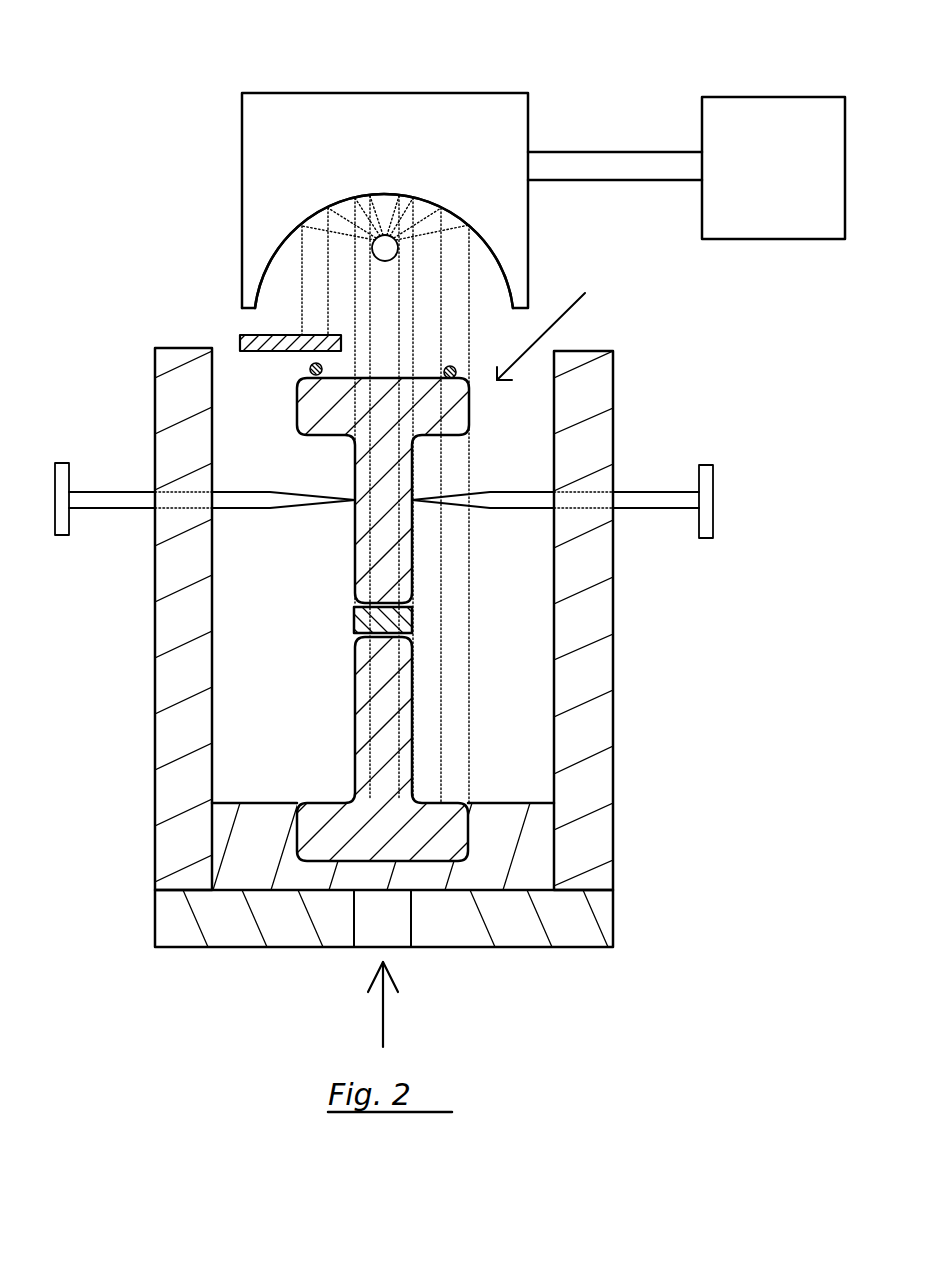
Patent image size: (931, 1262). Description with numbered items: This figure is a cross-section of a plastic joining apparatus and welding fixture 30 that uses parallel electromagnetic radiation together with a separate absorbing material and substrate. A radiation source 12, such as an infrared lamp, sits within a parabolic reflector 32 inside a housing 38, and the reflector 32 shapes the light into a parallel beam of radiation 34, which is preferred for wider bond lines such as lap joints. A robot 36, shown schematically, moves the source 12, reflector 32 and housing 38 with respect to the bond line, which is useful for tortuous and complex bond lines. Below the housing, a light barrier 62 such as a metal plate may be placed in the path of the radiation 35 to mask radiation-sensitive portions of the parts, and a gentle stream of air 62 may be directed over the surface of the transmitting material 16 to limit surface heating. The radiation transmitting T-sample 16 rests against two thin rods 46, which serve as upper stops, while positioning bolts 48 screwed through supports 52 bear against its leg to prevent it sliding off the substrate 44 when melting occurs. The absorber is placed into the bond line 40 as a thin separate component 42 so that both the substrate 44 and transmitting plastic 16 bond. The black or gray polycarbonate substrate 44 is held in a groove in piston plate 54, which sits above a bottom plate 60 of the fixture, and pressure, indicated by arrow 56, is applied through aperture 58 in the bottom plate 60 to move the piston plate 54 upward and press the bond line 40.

The fixture 30 is at (200, 47).
The housing 38 is at (410, 122).
The parabolic reflector 32 is at (420, 205).
The robot 36 is at (786, 125).
The radiation source 12 is at (398, 250).
The parallel beam of radiation 34 is at (373, 252).
The radiation 35 is at (300, 308).
The light barrier / stream of air 62 is at (240, 338).
The supports 52 is at (180, 745).
The piston plate 54 is at (537, 842).
The bottom plate 60 is at (180, 918).
The aperture 58 is at (386, 937).
The pressure arrow 56 is at (382, 1015).
The transmitting plastic T-sample 16 is at (450, 408).
The thin rods 46 is at (308, 372).
The positioning bolts 48 is at (57, 483).
The separate absorber component 42 is at (412, 623).
The bond line 40 is at (345, 620).
The substrate T-sample 44 is at (400, 762).